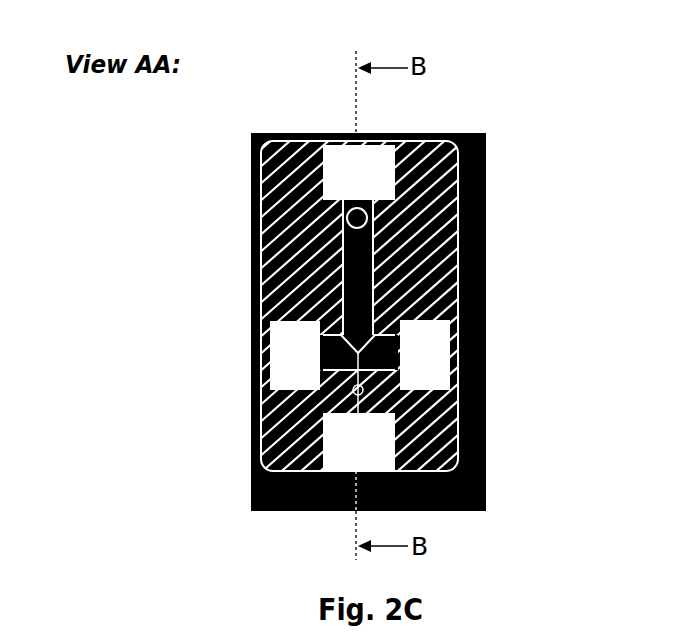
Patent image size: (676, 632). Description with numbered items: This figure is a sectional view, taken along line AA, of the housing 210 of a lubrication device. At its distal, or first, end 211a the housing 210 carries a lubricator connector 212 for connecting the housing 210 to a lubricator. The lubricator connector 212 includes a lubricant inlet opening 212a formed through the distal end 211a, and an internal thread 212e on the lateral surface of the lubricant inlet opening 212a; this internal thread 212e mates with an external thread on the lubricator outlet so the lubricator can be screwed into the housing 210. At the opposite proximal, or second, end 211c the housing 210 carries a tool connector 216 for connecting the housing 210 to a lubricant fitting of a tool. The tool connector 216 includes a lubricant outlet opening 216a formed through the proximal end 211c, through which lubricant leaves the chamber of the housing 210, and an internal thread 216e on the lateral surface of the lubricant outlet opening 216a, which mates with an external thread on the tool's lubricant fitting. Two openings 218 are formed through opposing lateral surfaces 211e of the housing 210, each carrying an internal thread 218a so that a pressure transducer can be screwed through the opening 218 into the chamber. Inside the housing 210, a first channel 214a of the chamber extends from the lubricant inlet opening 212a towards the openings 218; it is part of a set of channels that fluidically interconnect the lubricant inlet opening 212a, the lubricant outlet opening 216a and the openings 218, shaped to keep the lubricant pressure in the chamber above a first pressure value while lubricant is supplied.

The housing 210 is at (102, 28).
The distal end of housing 211a is at (428, 97).
The proximal end of housing 211c is at (418, 467).
The lateral surface of housing 211e is at (450, 223).
The lubricator connector 212 is at (313, 54).
The lubricant inlet opening 212a is at (327, 127).
The internal thread 212e is at (313, 155).
The first channel 214a is at (347, 257).
The tool connector 216 is at (162, 403).
The lubricant outlet opening 216a is at (330, 467).
The internal thread 216e is at (313, 427).
The opening 218 is at (256, 347).
The internal thread 218a is at (262, 313).